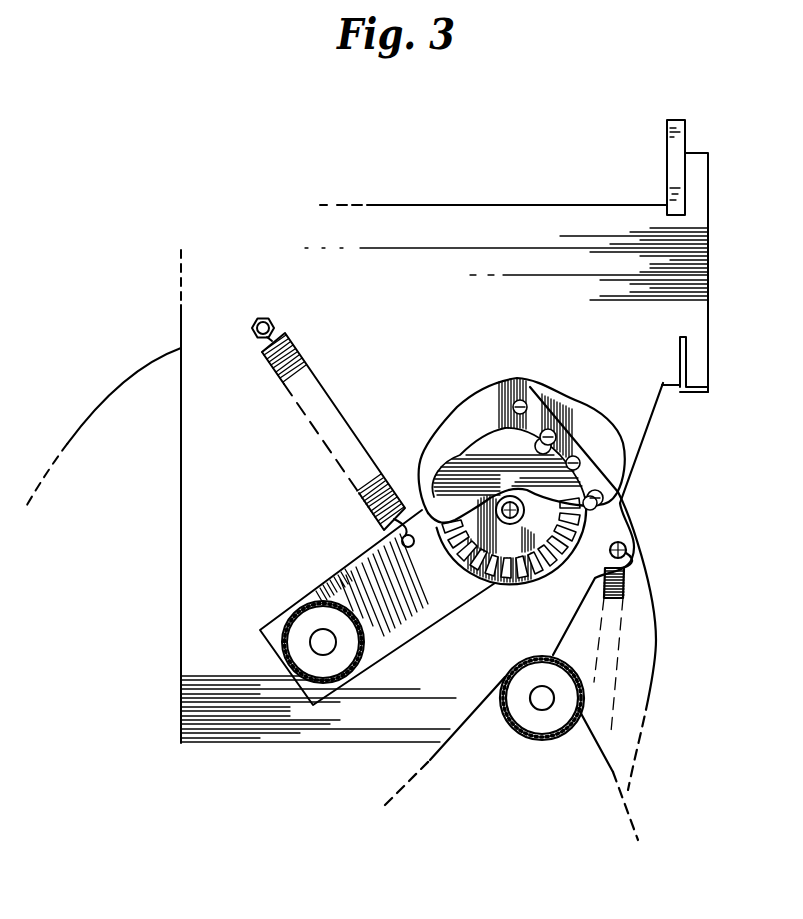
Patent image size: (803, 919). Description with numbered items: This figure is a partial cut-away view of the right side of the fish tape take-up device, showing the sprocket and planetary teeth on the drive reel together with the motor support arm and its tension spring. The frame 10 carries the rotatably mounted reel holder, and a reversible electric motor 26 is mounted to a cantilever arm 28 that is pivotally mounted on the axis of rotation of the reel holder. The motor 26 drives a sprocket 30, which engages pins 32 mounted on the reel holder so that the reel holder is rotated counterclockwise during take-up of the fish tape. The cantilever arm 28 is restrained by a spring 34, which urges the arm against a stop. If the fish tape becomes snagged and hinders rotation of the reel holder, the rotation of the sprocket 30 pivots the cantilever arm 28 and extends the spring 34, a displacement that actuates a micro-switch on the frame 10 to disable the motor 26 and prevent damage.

The frame 10 is at (523, 205).
The motor 26 is at (532, 590).
The cantilever arm 28 is at (353, 563).
The sprocket 30 is at (524, 428).
The pins 32 is at (553, 430).
The spring 34 is at (297, 335).